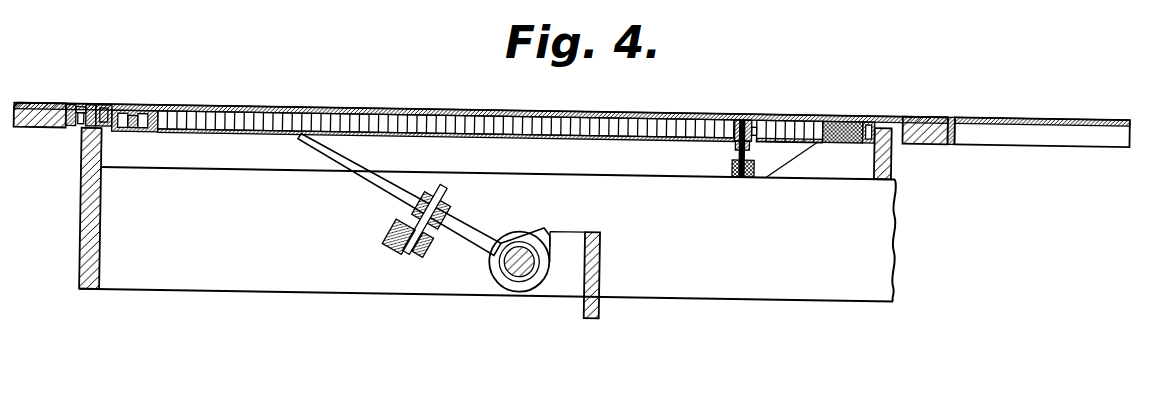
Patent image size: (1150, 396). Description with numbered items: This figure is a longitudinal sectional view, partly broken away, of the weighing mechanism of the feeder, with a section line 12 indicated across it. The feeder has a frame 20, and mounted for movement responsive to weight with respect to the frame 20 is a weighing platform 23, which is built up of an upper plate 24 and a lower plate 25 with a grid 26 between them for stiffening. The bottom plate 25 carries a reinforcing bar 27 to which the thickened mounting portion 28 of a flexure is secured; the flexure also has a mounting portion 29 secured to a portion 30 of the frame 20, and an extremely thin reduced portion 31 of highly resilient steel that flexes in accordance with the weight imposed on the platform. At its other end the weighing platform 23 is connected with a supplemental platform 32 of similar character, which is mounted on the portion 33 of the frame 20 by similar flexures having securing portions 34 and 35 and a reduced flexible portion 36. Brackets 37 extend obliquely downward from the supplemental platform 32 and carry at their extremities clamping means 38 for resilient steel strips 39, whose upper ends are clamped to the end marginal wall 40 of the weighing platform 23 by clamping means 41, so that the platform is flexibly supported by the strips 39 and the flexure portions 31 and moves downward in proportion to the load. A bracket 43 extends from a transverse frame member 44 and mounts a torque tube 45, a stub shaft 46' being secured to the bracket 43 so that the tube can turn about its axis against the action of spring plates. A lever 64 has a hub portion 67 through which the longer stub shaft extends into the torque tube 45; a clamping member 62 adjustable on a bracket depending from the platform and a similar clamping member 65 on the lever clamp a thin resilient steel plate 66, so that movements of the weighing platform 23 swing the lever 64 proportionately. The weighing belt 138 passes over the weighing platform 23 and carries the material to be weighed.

The section line 12- 12 is at (372, 366).
The frame 20 is at (888, 226).
The weighing platform 23 is at (480, 122).
The upper plate 24 is at (632, 104).
The lower plate 25 is at (653, 131).
The grid 26 is at (692, 111).
The reinforcing bar 27 is at (136, 129).
The thickened mounting portion 28 is at (142, 107).
The mounting portion 29 is at (90, 104).
The portion of the frame 30 is at (72, 128).
The reduced portion 31 is at (118, 104).
The supplemental platform 32 is at (796, 111).
The portion of the frame 33 is at (892, 154).
The securing portion 34 is at (845, 110).
The securing portion 35 is at (905, 105).
The reduced flexible portion 36 is at (870, 110).
The bracket 37 is at (797, 139).
The clamping means 38 is at (742, 170).
The resilient steel strip 39 is at (735, 142).
The end marginal wall 40 is at (738, 110).
The clamping means 41 is at (747, 131).
The bracket 43 is at (572, 225).
The transverse frame member 44 is at (604, 260).
The torque tube 45 is at (515, 272).
The stub shaft 46' is at (518, 281).
The clamping member 62 is at (396, 220).
The lever 64 is at (492, 204).
The clamping member 65 is at (457, 196).
The resilient steel plate 66 is at (427, 233).
The hub portion 67 is at (550, 265).
The weighing belt 138 is at (930, 107).